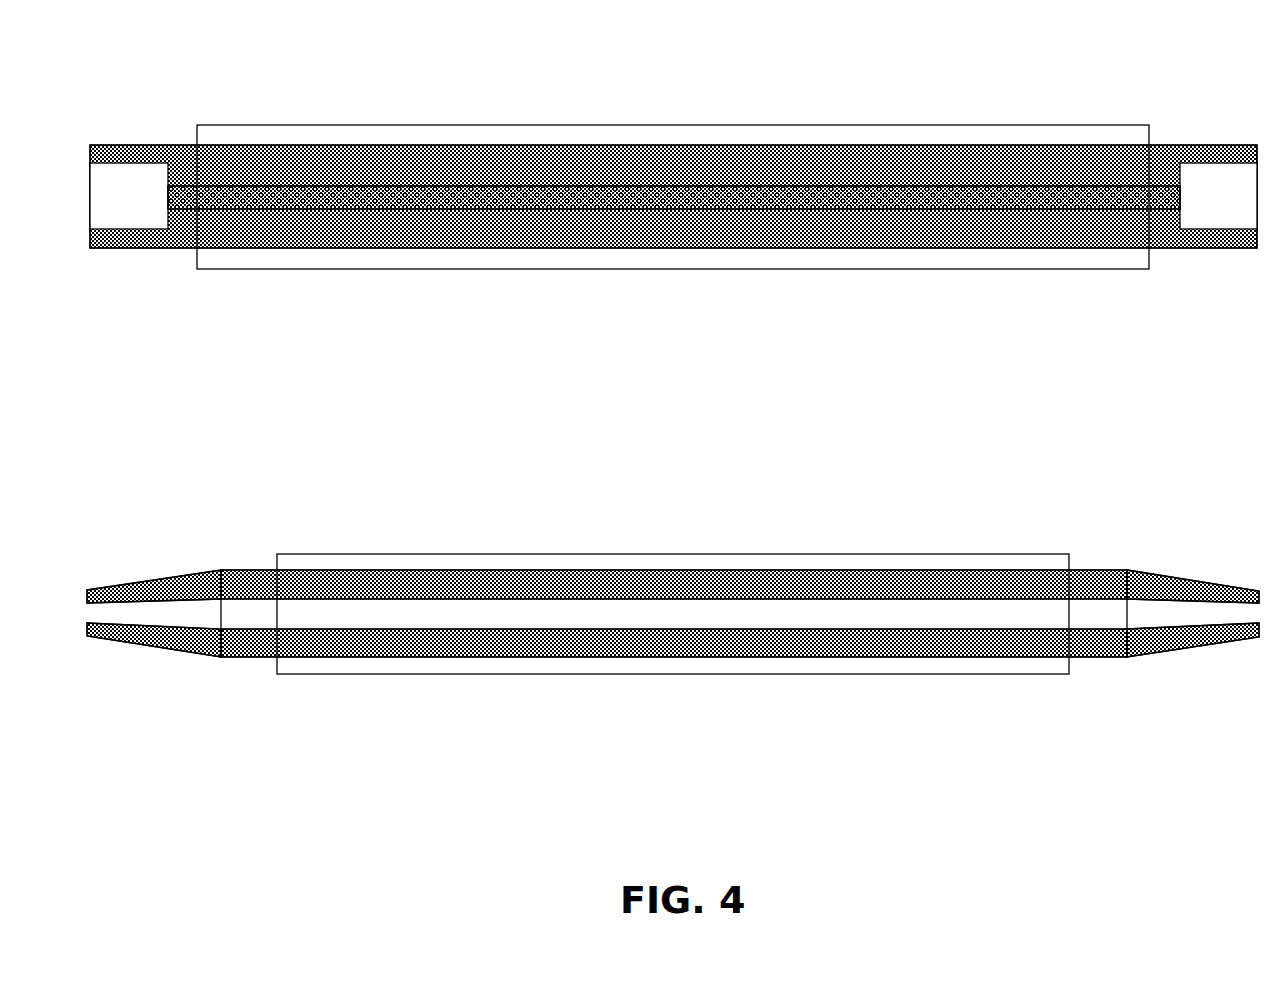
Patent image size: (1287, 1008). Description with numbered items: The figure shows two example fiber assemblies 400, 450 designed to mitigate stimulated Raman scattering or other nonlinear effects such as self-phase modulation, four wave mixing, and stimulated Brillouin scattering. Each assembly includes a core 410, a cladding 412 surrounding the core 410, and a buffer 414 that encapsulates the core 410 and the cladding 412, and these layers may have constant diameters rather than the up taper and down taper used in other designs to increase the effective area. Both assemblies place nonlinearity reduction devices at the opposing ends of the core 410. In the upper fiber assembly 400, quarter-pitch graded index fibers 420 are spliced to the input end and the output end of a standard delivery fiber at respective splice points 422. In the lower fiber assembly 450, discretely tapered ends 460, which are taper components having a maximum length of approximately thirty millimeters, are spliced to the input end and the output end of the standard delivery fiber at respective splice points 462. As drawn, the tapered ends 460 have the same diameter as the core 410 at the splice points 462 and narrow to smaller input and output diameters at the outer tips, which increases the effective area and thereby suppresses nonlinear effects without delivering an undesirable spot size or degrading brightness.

The fiber assembly 400 is at (176, 31).
The core 410 is at (1000, 185).
The cladding 412 is at (1190, 144).
The buffer 414 is at (650, 125).
The ¼ pitch graded index (GI) fiber 420 is at (150, 208).
The splice point 422 is at (171, 212).
The fiber assembly 450 is at (176, 489).
The tapered end 460 is at (123, 640).
The splice point 462 is at (220, 676).